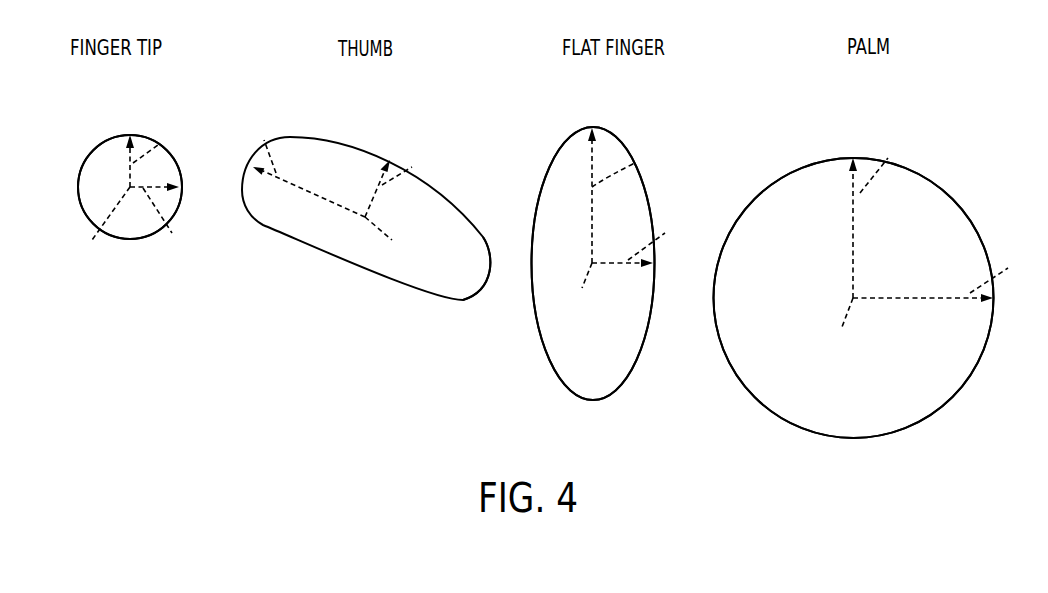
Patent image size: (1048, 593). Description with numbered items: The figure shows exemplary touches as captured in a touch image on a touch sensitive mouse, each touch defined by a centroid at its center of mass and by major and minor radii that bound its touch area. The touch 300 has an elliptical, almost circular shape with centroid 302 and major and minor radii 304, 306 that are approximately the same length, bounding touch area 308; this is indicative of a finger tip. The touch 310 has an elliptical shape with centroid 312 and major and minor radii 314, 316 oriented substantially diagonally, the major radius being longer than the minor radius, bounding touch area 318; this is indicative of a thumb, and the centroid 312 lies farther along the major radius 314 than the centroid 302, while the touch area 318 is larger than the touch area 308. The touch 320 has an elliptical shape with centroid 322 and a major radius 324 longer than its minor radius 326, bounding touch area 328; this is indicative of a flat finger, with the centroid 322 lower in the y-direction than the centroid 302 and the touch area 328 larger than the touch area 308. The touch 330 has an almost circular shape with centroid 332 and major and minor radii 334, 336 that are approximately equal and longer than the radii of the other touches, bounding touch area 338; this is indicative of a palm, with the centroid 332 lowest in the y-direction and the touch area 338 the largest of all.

The touch 300 is at (100, 143).
The centroid 302 is at (105, 228).
The major radius 304 is at (163, 142).
The minor radius 306 is at (165, 226).
The touch area 308 is at (95, 177).
The touch 310 is at (327, 137).
The centroid 312 is at (387, 244).
The major radius 314 is at (308, 165).
The minor radius 316 is at (418, 163).
The touch area 318 is at (447, 287).
The touch 320 is at (620, 140).
The centroid 322 is at (583, 290).
The major radius 324 is at (640, 162).
The minor radius 326 is at (655, 233).
The touch area 328 is at (633, 337).
The touch 330 is at (948, 193).
The centroid 332 is at (845, 325).
The major radius 334 is at (890, 153).
The minor radius 336 is at (997, 265).
The touch area 338 is at (795, 183).